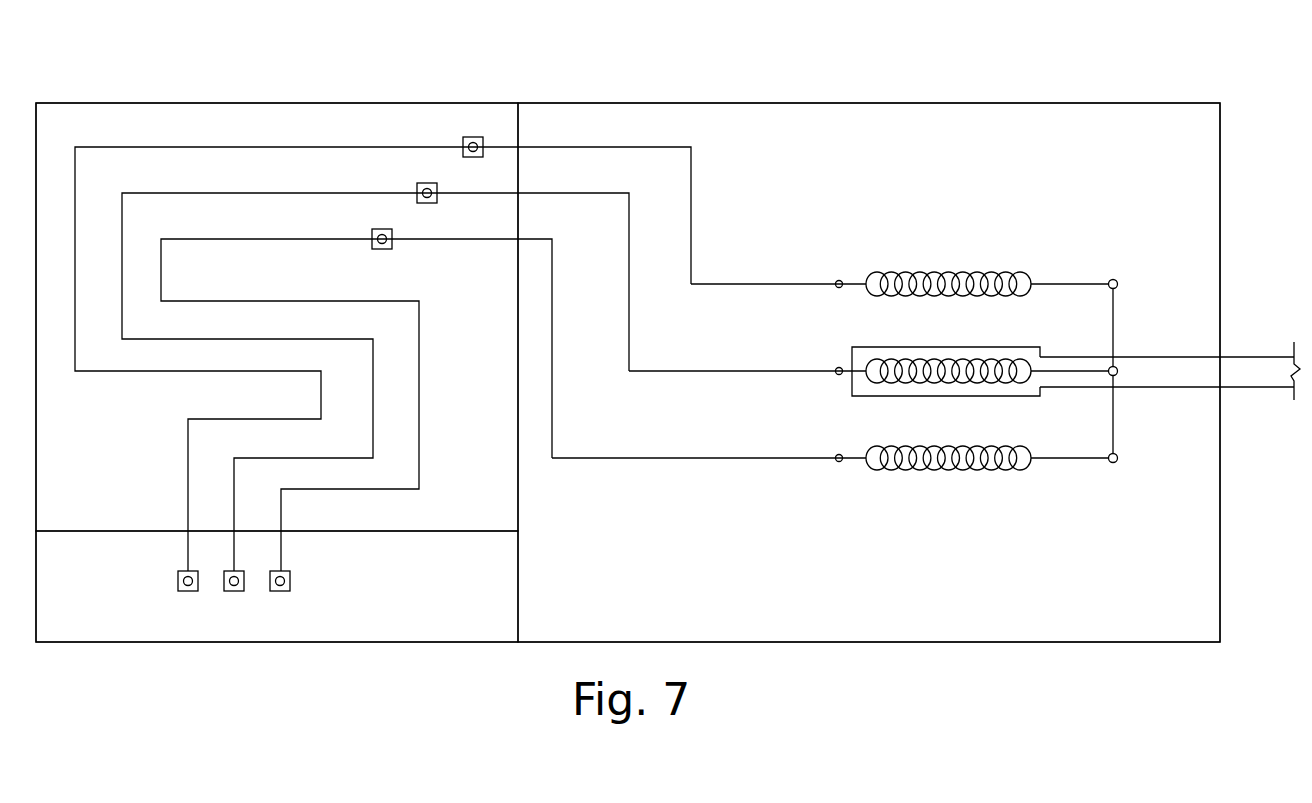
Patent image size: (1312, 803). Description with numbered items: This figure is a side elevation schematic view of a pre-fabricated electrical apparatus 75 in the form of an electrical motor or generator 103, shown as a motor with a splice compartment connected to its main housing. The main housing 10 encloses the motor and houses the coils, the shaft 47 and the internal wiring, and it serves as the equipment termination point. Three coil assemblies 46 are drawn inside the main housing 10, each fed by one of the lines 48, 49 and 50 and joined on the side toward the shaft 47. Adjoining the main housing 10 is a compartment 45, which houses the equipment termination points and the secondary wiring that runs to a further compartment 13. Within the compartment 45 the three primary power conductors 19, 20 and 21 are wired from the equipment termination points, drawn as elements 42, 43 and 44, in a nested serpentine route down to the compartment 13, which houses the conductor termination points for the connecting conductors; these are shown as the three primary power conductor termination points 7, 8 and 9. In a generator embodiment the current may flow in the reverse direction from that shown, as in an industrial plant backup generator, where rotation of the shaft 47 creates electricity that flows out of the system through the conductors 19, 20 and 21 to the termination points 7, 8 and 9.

The primary power conductor termination point 7 is at (176, 578).
The primary power conductor termination point 8 is at (222, 585).
The primary power conductor termination point 9 is at (269, 583).
The main housing 10 is at (1062, 557).
The primary power in and or out compartment 13 is at (442, 607).
The primary power conductor 19 is at (188, 485).
The primary power conductor 20 is at (373, 427).
The primary power conductor 21 is at (333, 302).
The contact point 42 is at (373, 229).
The contact point 43 is at (418, 185).
The contact point 44 is at (467, 138).
The compartment 45 is at (82, 466).
The heating coil 46 is at (985, 297).
The shaft 47 is at (1184, 382).
The connecting line 48 is at (612, 458).
The connecting line 49 is at (688, 371).
The connecting line 50 is at (765, 284).
The pre-fabricated electrical apparatus 75 is at (1170, 44).
The electrical motor or generator 103 is at (708, 102).